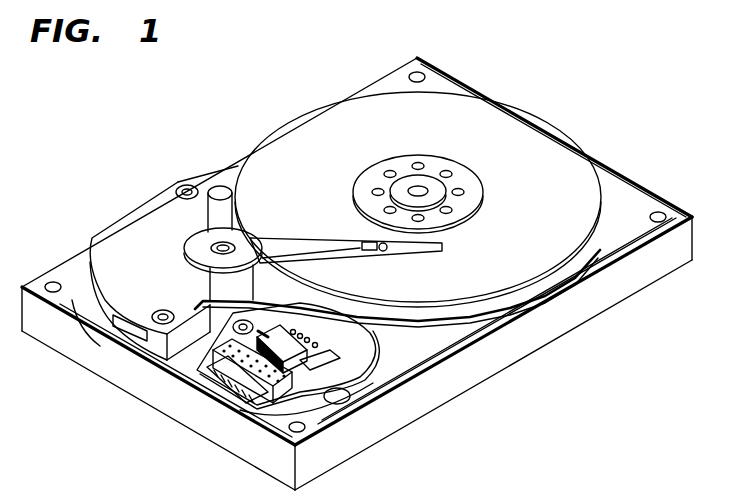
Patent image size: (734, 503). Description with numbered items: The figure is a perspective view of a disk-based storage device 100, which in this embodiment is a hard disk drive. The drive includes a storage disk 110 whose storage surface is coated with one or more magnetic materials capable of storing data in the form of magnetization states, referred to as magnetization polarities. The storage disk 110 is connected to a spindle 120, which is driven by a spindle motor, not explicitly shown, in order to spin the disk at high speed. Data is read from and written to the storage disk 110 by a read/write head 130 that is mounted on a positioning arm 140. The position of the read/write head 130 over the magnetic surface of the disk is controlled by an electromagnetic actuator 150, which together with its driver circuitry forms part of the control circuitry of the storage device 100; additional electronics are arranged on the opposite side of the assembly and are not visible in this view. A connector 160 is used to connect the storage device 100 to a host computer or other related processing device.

The disk-based storage device 100 is at (140, 103).
The storage disk 110 is at (532, 128).
The spindle 120 is at (436, 189).
The read/write head 130 is at (410, 245).
The positioning arm 140 is at (284, 240).
The electromagnetic actuator 150 is at (126, 238).
The connector 160 is at (237, 372).